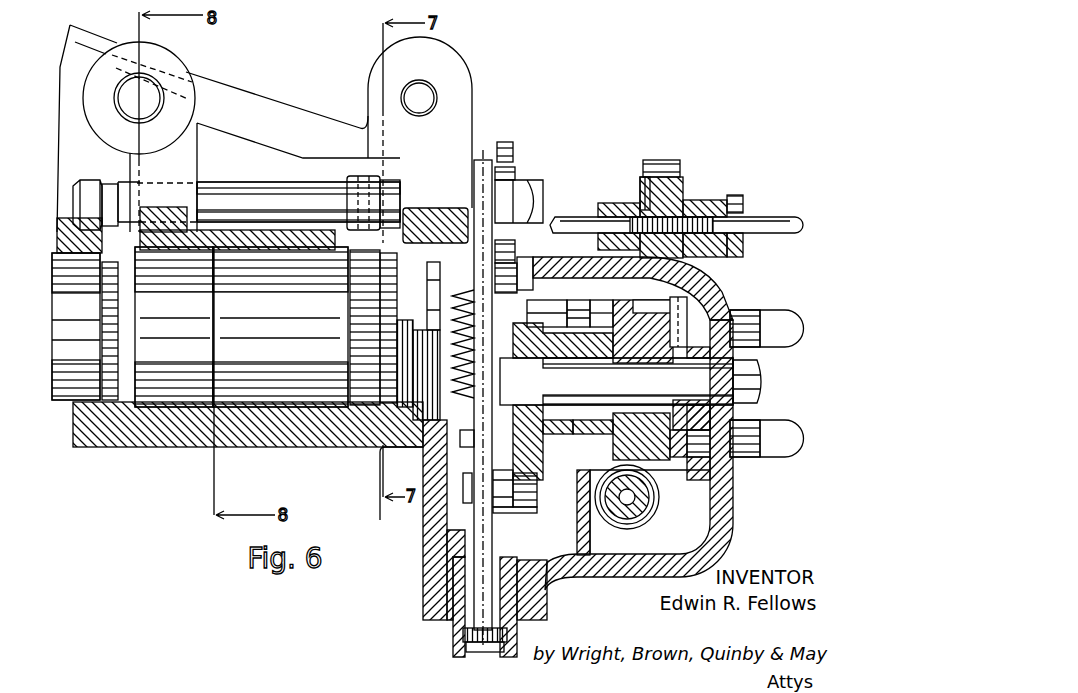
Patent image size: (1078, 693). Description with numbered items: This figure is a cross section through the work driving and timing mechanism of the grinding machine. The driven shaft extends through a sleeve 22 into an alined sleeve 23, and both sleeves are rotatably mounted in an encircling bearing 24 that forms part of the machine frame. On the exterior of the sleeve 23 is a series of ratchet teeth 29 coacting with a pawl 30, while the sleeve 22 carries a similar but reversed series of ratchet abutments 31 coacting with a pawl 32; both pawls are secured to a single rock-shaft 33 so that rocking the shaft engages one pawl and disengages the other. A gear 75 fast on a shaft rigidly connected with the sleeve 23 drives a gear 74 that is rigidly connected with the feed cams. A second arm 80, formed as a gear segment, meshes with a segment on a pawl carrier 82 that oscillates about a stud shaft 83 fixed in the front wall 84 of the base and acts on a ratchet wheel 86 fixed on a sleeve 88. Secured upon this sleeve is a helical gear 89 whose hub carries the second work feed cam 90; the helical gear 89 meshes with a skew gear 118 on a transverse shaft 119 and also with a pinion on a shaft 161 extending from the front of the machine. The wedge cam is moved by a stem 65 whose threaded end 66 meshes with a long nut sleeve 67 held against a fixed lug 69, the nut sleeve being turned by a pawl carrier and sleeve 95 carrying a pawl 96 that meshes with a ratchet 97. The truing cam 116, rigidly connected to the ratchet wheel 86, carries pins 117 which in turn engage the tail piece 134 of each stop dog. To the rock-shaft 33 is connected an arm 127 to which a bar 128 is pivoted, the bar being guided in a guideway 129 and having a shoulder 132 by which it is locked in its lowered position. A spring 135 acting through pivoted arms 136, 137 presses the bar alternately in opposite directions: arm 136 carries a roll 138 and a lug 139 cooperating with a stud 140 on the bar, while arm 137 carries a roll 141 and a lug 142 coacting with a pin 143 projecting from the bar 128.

The sleeve 22 is at (152, 425).
The alined sleeve 23 is at (297, 425).
The encircling bearing 24 is at (197, 430).
The ratchet teeth 29 is at (378, 265).
The pawl 30 is at (336, 228).
The ratchet abutments 31 is at (75, 410).
The pawl 32 is at (140, 225).
The rock-shaft 33 is at (232, 200).
The stem 65 is at (563, 222).
The threaded end 66 is at (703, 200).
The nut sleeve 67 is at (728, 196).
The fixed lug 69 is at (607, 203).
The gear 74 is at (392, 432).
The gear 75 is at (385, 420).
The second arm 80 is at (598, 312).
The pawl carrier 82 is at (600, 434).
The stud shaft 83 is at (616, 381).
The front wall 84 is at (760, 352).
The ratchet wheel 86 is at (548, 436).
The sleeve 88 is at (616, 450).
The helical gear 89 is at (636, 311).
The second work feed cam 90 is at (685, 312).
The pawl carrier and sleeve 95 is at (677, 195).
The pawl 96 is at (653, 160).
The ratchet 97 is at (644, 192).
The truing cam 116 is at (571, 312).
The pins 117 is at (532, 312).
The skew gear 118 is at (648, 500).
The transverse shaft 119 is at (630, 508).
The arm 127 is at (513, 148).
The bar 128 is at (492, 200).
The guideway 129 is at (508, 562).
The shoulder 132 is at (522, 360).
The tail piece 134 is at (552, 412).
The spring 135 is at (470, 398).
The pivoted arm 136 is at (516, 250).
The pivoted arm 137 is at (537, 490).
The roll 138 is at (548, 262).
The lug 139 is at (423, 218).
The stud 140 is at (438, 298).
The roll 141 is at (537, 511).
The lug 142 is at (463, 490).
The pin 143 is at (462, 440).
The shaft 161 is at (748, 315).